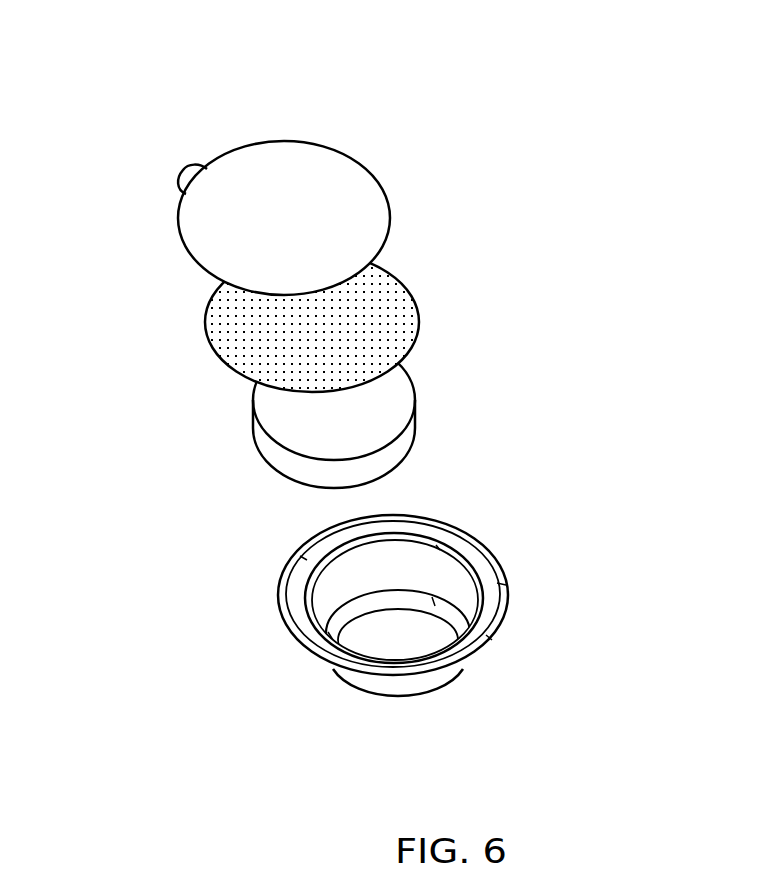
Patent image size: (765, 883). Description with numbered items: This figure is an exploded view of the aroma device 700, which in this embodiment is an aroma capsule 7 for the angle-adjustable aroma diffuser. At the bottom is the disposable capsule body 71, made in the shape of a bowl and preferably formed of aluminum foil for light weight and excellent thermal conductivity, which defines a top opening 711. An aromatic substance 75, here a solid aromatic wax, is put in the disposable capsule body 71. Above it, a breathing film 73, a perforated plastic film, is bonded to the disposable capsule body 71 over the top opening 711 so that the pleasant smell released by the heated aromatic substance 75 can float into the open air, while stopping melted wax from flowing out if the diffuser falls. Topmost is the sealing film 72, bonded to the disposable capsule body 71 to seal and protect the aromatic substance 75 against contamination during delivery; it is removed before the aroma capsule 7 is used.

The aroma device 700 is at (203, 92).
The aroma capsule 7 is at (643, 145).
The sealing film 72 is at (355, 202).
The breathing film 73 is at (390, 317).
The aromatic substance 75 is at (385, 412).
The disposable capsule body 71 is at (493, 598).
The top opening 711 is at (408, 565).